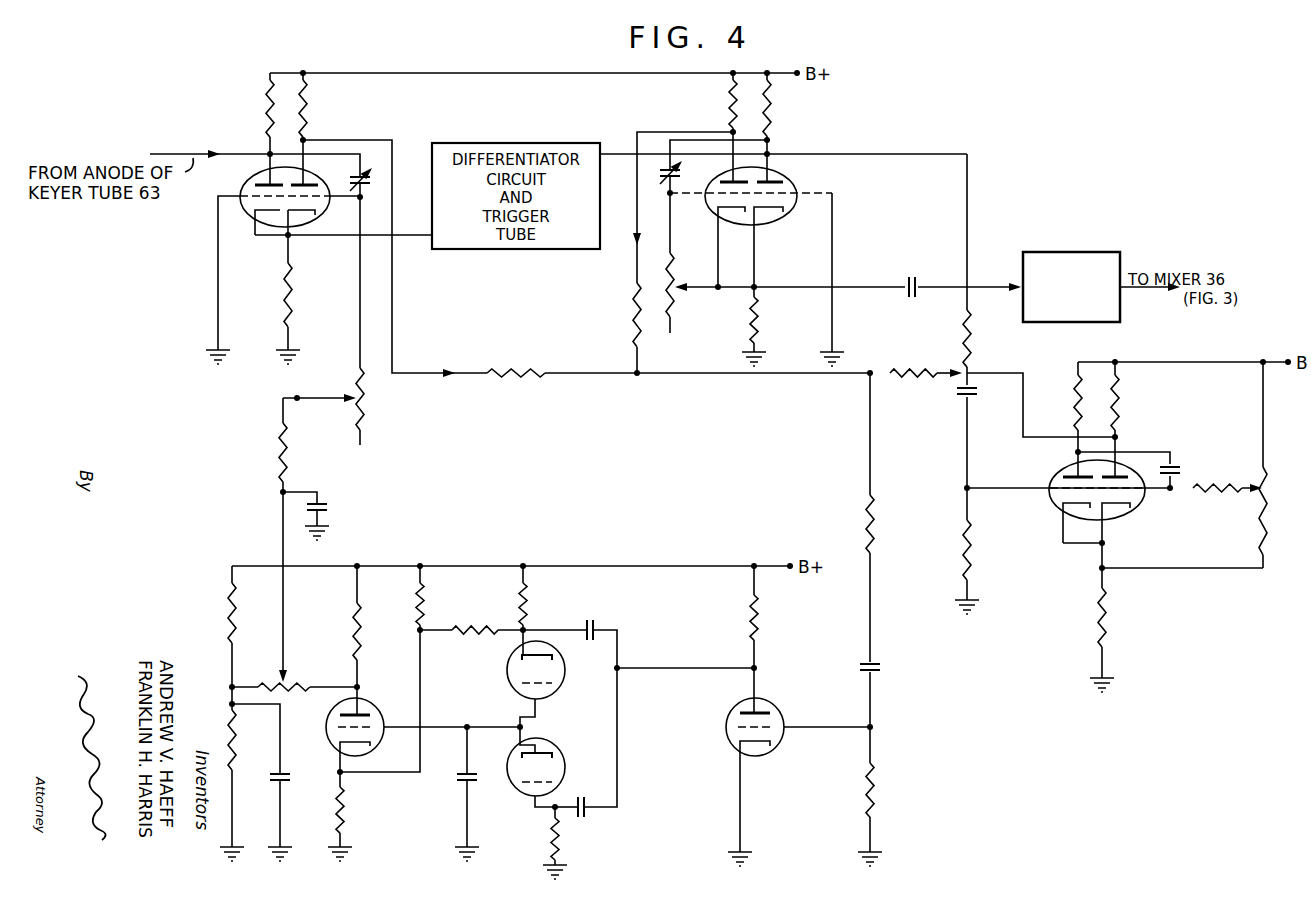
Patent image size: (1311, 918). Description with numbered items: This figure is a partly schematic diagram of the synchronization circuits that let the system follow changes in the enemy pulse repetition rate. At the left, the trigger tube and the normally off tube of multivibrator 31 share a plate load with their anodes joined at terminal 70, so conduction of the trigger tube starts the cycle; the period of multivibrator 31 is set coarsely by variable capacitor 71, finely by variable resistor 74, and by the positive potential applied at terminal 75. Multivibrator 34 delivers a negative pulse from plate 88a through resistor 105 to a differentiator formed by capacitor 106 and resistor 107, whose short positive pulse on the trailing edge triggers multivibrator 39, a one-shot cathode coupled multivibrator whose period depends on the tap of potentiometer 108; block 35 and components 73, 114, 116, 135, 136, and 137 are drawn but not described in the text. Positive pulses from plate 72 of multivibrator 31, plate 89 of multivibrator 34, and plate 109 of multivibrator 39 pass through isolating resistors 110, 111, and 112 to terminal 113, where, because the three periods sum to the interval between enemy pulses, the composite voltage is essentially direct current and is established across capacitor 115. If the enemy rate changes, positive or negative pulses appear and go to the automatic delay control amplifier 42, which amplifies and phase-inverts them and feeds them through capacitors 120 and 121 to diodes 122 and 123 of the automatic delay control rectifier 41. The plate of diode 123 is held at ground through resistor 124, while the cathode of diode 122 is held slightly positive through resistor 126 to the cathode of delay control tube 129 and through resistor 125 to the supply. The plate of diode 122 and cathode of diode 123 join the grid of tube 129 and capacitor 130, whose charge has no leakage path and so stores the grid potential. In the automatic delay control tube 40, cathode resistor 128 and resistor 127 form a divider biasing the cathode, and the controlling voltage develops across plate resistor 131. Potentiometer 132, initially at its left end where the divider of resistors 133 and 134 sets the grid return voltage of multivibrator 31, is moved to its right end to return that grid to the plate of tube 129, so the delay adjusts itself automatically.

The multivibrator 31 is at (258, 388).
The multivibrator 34 is at (712, 342).
The multivibrator MVBR 35 is at (1057, 252).
The multivibrator 39 is at (1200, 621).
The automatic delay control tube 40 is at (424, 772).
The automatic delay control rectifier 41 is at (557, 741).
The automatic delay control amplifier 42 is at (808, 836).
The terminal 70 is at (270, 153).
The variable capacitor 71 is at (375, 179).
The plate 72 is at (305, 180).
The cathode resistor 73 is at (290, 238).
The variable resistor 74 is at (343, 406).
The terminal 75 is at (294, 394).
The plate 88a is at (770, 180).
The plate 89 is at (738, 176).
The resistor 105 is at (967, 320).
The capacitor 106 is at (982, 396).
The resistor 107 is at (969, 528).
The potentiometer 108 is at (1271, 518).
The plate 109 is at (1129, 461).
The isolating resistor 110 is at (534, 368).
The isolating resistor 111 is at (632, 314).
The isolating resistor 112 is at (925, 368).
The terminal 113 is at (866, 363).
The resistor 114 is at (872, 519).
The capacitor 115 is at (876, 660).
The resistor 116 is at (872, 778).
The capacitor 120 is at (572, 628).
The capacitor 121 is at (600, 790).
The diode 122 is at (565, 670).
The diode 123 is at (566, 757).
The resistor 124 is at (555, 830).
The resistor 125 is at (522, 586).
The resistor 126 is at (489, 627).
The resistor 127 is at (421, 587).
The cathode resistor 128 is at (342, 798).
The delay control tube 129 is at (385, 704).
The capacitor 130 is at (486, 782).
The resistor 131 is at (357, 640).
The potentiometer 132 is at (275, 690).
The resistor 133 is at (226, 632).
The resistor 134 is at (232, 740).
The capacitor 135 is at (312, 772).
The capacitor 136 is at (323, 507).
The resistor 137 is at (285, 447).